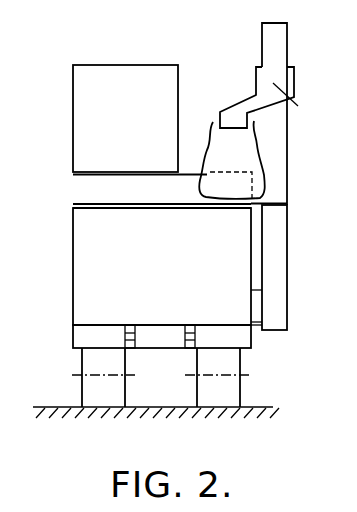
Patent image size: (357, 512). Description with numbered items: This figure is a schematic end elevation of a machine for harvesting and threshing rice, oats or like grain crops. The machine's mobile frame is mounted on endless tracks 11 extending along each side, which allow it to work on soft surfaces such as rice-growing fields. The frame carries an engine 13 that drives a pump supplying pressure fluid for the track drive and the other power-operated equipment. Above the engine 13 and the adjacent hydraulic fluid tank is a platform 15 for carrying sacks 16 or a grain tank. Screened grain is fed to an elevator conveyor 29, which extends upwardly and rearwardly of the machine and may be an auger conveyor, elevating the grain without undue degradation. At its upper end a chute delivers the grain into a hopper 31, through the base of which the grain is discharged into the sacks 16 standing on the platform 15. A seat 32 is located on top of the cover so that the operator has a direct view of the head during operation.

The endless tracks 11 is at (85, 385).
The engine 13 is at (167, 271).
The platform 15 is at (97, 207).
The sacks 16 is at (252, 146).
The elevator conveyor 29 is at (284, 36).
The hopper 31 is at (288, 98).
The seat 32 is at (85, 115).